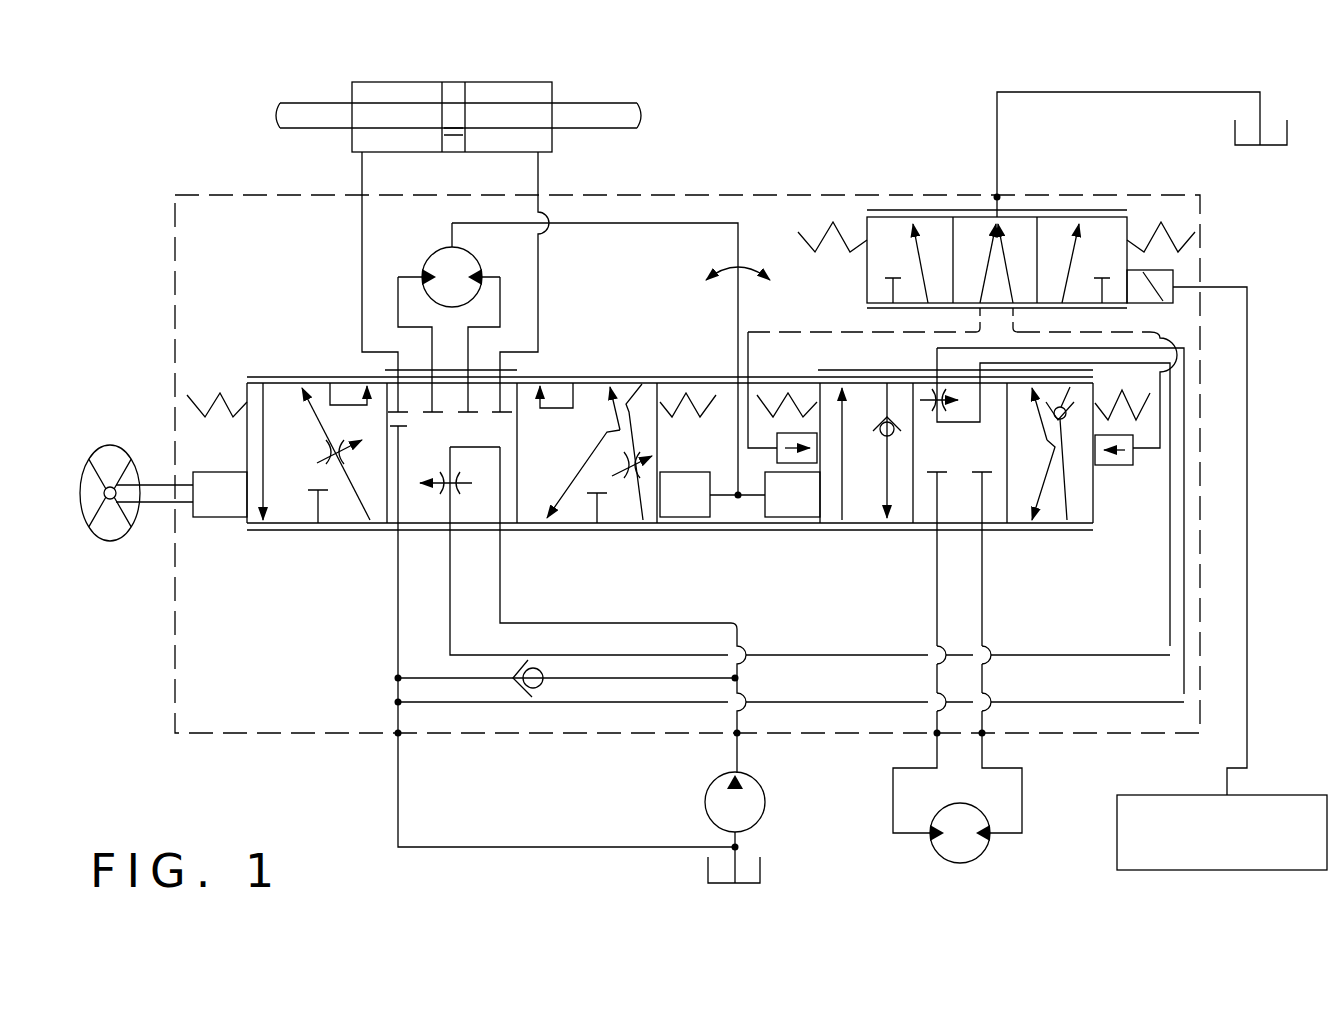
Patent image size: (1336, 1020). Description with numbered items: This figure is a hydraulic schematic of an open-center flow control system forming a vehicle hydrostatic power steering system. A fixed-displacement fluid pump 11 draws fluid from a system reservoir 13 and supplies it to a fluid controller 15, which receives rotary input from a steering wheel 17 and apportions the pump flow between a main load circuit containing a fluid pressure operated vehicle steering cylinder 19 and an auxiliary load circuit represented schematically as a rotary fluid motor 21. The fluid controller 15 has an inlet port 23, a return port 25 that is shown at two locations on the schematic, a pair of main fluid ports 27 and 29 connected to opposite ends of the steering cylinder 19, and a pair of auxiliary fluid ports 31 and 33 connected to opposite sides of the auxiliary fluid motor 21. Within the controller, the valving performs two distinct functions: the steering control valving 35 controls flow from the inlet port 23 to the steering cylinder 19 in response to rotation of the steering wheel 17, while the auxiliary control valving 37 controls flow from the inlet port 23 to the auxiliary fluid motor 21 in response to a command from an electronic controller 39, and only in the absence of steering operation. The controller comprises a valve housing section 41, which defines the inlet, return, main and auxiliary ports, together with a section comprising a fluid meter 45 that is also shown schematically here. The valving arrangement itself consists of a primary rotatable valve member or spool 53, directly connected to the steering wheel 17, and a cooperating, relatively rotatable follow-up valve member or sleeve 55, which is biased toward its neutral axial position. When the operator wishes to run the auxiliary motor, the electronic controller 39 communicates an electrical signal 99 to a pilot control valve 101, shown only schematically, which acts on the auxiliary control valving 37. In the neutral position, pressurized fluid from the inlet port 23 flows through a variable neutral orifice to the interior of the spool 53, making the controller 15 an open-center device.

The fluid pump 11 is at (705, 812).
The system reservoir 13 is at (760, 873).
The fluid controller 15 is at (797, 186).
The steering wheel 17 is at (115, 446).
The vehicle steering cylinder 19 is at (553, 95).
The rotary fluid motor 21 is at (985, 849).
The inlet port 23 is at (739, 735).
The return port 25 is at (999, 197).
The main fluid port 27 is at (541, 193).
The main fluid port 29 is at (360, 193).
The auxiliary fluid port 31 is at (937, 735).
The auxiliary fluid port 33 is at (983, 735).
The steering control valving 35 is at (451, 437).
The auxiliary control valving 37 is at (862, 562).
The electronic controller 39 is at (1175, 795).
The valve housing section 41 is at (1067, 530).
The fluid meter 45 is at (432, 253).
The rotatable valve member 53 is at (362, 528).
The follow-up valve member 55 is at (283, 530).
The electrical signal 99 is at (1249, 645).
The pilot control valve 101 is at (933, 206).